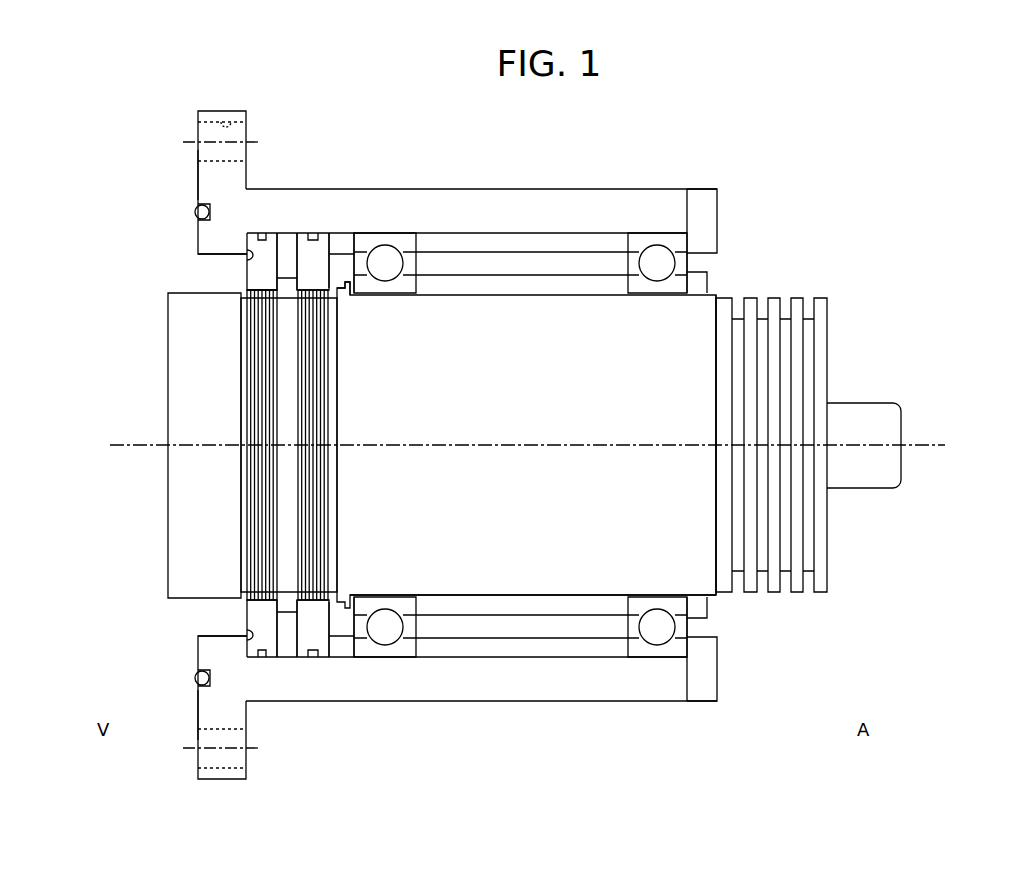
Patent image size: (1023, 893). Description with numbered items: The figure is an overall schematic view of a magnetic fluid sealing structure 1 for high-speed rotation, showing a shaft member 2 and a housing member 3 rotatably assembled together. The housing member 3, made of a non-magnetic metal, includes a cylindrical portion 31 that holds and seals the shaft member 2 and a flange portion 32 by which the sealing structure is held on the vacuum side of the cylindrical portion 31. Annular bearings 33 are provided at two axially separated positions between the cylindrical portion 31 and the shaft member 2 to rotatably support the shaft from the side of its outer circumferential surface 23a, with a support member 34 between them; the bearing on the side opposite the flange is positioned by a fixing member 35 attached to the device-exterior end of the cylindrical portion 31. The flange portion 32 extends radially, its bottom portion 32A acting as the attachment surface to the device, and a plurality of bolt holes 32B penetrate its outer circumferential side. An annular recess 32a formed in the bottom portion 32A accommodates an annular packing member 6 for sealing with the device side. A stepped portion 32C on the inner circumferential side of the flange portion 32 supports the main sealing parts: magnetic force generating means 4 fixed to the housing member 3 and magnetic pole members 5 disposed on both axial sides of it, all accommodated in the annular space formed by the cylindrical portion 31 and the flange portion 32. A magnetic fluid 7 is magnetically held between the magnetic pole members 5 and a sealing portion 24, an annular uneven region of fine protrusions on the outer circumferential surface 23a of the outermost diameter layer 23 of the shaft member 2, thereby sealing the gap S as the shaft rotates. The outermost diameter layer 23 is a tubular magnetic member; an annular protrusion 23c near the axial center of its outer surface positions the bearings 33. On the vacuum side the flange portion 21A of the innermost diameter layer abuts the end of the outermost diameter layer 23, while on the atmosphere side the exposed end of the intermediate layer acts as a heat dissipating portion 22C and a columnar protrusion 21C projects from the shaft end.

The magnetic fluid sealing structure 1 is at (976, 150).
The shaft member 2 is at (842, 546).
The housing member 3 is at (368, 148).
The magnetic force generating means 4 is at (287, 248).
The magnetic pole members 5 is at (272, 233).
The packing member 6 is at (196, 212).
The magnetic fluid 7 is at (303, 275).
The flange portion 21A is at (172, 500).
The columnar protrusion 21C is at (845, 402).
The heat dissipating portion 22C is at (776, 288).
The outermost diameter layer 23 is at (710, 298).
The outer circumferential surface 23a is at (700, 588).
The annular protrusion 23c is at (347, 283).
The sealing portion 24 is at (243, 424).
The cylindrical portion 31 is at (620, 186).
The flange portion 32 is at (198, 234).
The bottom portion 32A is at (198, 168).
The bolt holes 32B is at (228, 118).
The stepped portion 32C is at (247, 258).
The annular recess 32a is at (197, 202).
The bearings 33 is at (388, 236).
The support member 34 is at (530, 240).
The fixing member 35 is at (710, 200).
The gap S is at (247, 292).